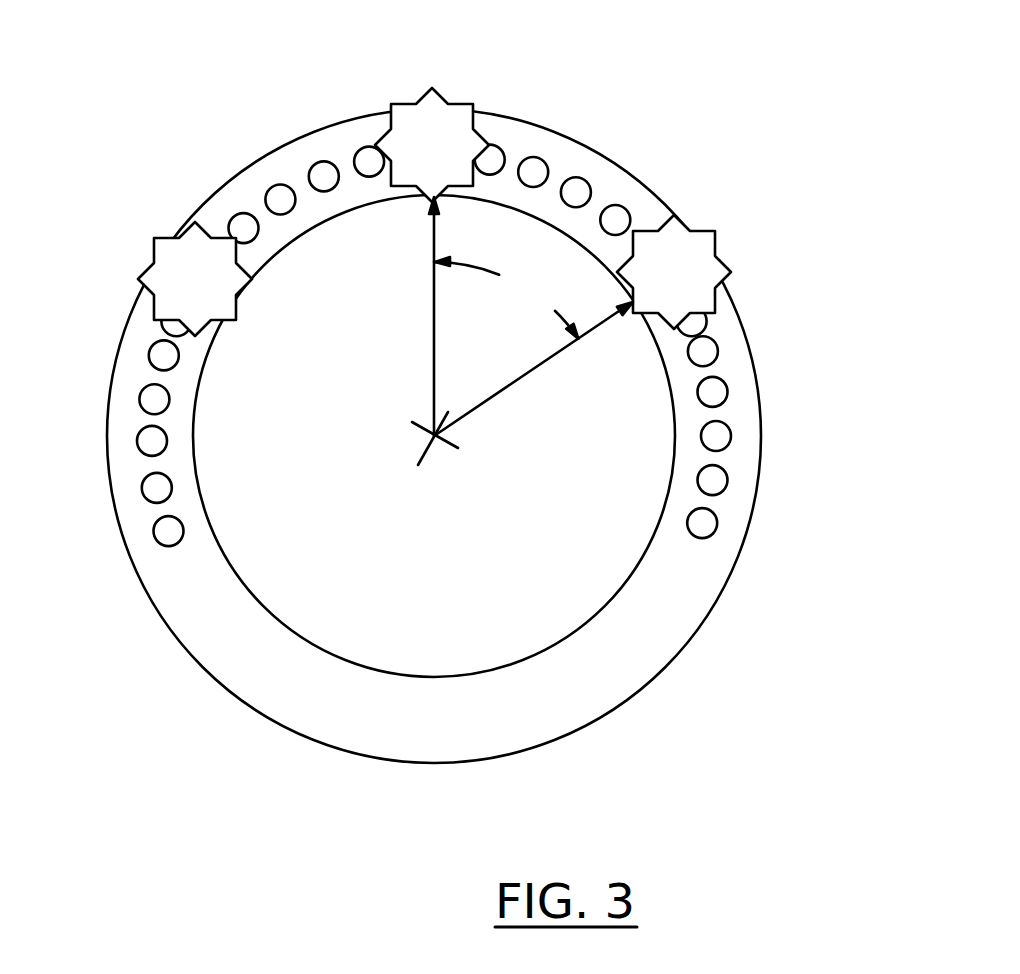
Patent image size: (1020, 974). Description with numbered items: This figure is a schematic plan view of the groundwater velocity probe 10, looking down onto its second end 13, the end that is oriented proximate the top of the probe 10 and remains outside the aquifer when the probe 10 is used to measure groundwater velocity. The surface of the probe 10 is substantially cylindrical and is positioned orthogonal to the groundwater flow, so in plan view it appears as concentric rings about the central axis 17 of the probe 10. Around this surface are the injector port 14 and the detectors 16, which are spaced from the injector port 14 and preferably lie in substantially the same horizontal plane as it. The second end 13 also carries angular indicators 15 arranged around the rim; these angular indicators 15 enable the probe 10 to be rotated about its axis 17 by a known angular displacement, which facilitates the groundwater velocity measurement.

The groundwater velocity probe 10 is at (790, 334).
The second end 13 is at (632, 660).
The injector port 14 is at (432, 91).
The angular indicators 15 is at (590, 182).
The detector 16 is at (158, 238).
The axis 17 is at (444, 456).